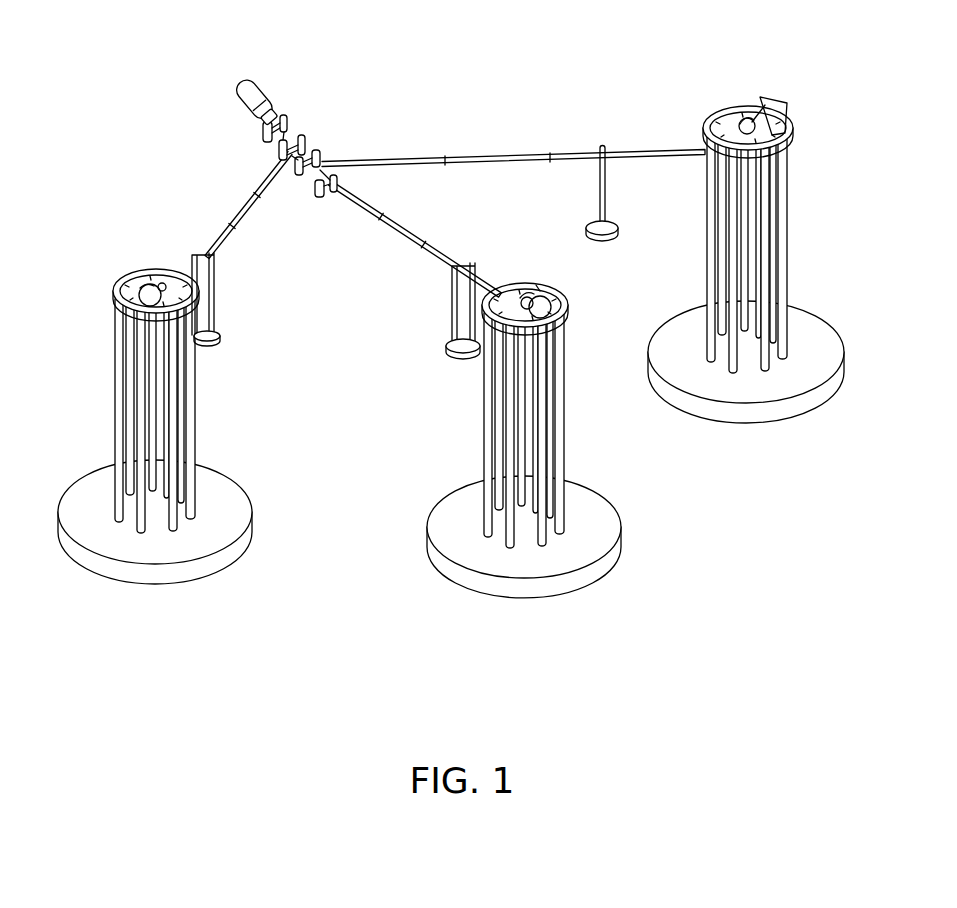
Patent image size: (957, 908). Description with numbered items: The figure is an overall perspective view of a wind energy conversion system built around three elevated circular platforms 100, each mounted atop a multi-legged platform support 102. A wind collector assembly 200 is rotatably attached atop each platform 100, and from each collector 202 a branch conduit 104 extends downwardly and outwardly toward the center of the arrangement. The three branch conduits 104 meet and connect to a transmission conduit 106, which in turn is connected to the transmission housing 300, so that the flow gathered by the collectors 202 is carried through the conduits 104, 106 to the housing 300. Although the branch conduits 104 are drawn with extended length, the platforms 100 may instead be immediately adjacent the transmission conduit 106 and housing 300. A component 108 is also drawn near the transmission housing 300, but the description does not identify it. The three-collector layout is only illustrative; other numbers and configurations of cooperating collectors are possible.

The elevated circular platform 100 is at (115, 300).
The multi-legged platform support 102 is at (197, 375).
The branch conduit 104 is at (252, 207).
The transmission conduit 106 is at (303, 142).
The power / drive unit 108 is at (255, 88).
The wind collector assembly 200 is at (162, 222).
The collector 202 is at (128, 272).
The transmission housing 300 is at (262, 130).